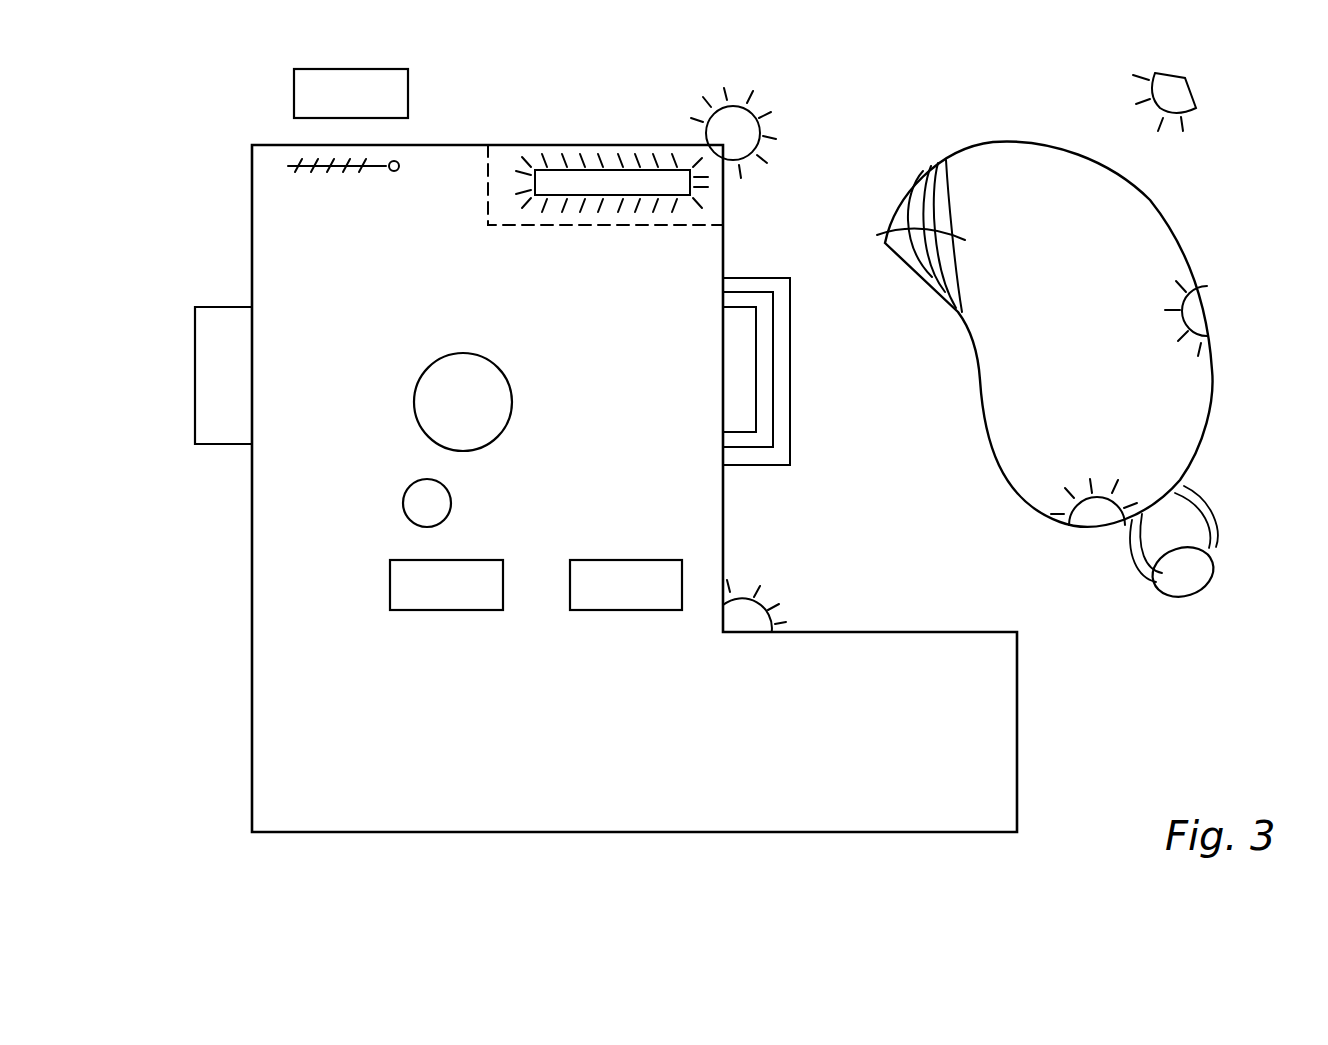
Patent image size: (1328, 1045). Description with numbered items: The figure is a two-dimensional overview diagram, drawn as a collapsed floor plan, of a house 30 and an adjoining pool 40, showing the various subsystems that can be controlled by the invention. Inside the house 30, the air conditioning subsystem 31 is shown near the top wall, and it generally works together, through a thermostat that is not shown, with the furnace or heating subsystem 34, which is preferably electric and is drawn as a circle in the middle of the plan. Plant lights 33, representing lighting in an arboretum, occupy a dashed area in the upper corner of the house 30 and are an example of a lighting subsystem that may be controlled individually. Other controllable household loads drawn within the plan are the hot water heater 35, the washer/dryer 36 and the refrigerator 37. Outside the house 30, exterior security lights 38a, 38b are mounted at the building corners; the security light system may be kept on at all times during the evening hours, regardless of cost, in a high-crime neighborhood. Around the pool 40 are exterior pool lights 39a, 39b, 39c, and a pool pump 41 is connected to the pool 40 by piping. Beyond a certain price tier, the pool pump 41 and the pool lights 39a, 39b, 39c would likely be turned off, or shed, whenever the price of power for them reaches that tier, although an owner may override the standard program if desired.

The house 30 is at (251, 633).
The air conditioning subsystem 31 is at (408, 94).
The plant lights 33 is at (565, 188).
The furnace or heating subsystem 34 is at (495, 362).
The hot water heater 35 is at (452, 503).
The washer/dryer 36 is at (503, 570).
The refrigerator 37 is at (628, 560).
The exterior security light 38a is at (760, 112).
The exterior security light 38b is at (765, 600).
The exterior pool light 39a is at (1196, 88).
The exterior pool light 39b is at (1205, 318).
The exterior pool light 39c is at (1097, 525).
The pool 40 is at (1045, 334).
The pool pump 41 is at (1224, 553).